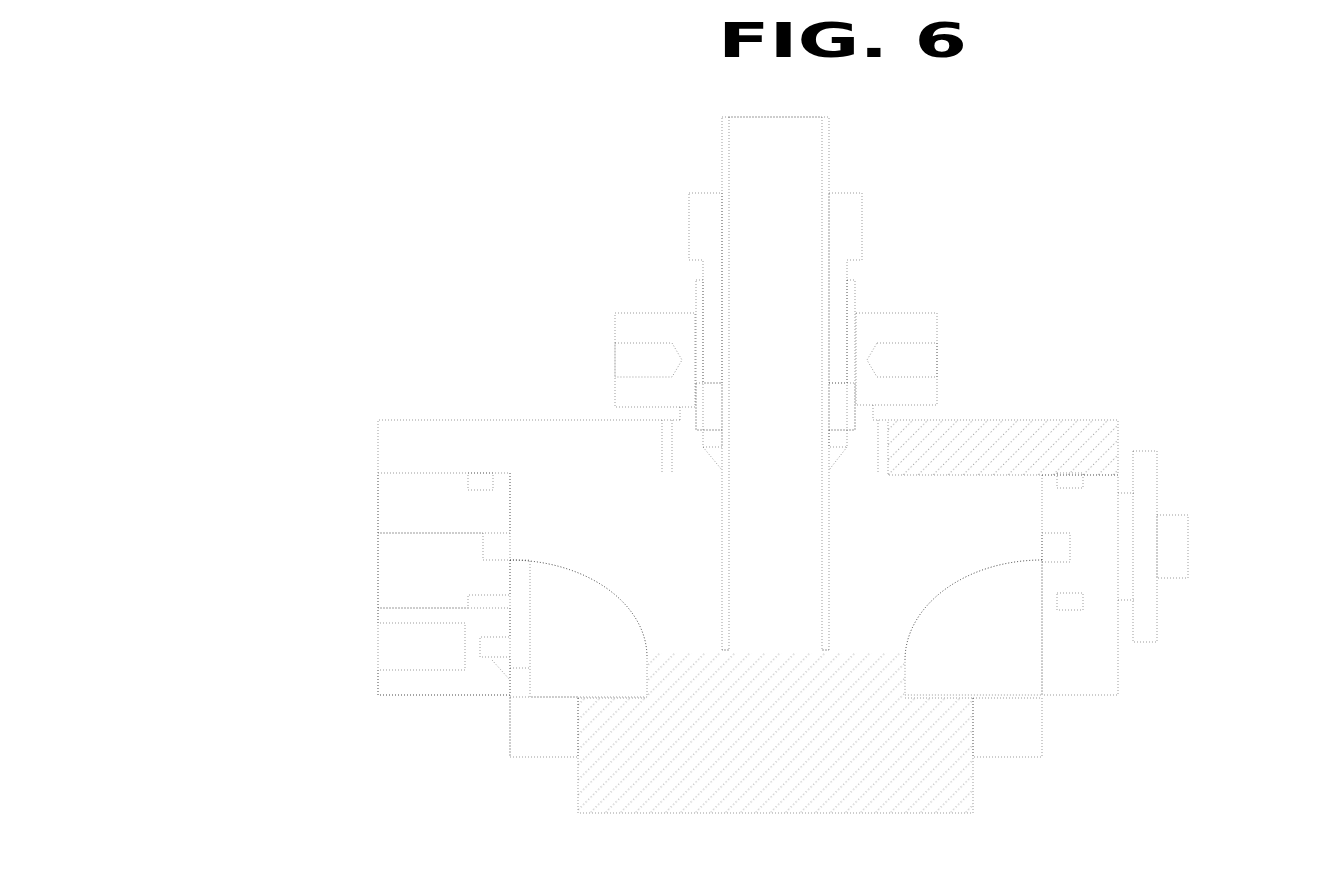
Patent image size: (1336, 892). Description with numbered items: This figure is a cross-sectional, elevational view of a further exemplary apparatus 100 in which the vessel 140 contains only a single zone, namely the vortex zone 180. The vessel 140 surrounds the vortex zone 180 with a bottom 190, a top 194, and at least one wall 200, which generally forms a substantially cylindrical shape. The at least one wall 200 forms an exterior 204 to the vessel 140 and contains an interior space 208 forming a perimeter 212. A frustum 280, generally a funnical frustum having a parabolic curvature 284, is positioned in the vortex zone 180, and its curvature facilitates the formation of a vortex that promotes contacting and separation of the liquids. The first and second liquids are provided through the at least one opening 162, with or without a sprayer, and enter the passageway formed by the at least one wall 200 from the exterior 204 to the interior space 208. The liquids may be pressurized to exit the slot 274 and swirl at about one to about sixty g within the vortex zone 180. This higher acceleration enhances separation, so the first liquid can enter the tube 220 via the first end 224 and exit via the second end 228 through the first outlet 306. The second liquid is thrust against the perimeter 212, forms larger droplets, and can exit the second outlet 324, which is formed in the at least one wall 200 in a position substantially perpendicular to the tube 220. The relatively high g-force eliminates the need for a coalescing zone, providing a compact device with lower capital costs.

The apparatus 100 is at (343, 230).
The vessel 140 is at (568, 432).
The opening 162 is at (1190, 515).
The vortex zone 180 is at (900, 543).
The bottom 190 is at (790, 790).
The top 194 is at (973, 418).
The wall 200 is at (1087, 440).
The exterior 204 is at (380, 513).
The interior space 208 is at (690, 542).
The perimeter 212 is at (513, 497).
The tube 220 is at (797, 226).
The first end 224 is at (780, 648).
The second end 228 is at (782, 117).
The slot 274 is at (1045, 575).
The frustum 280 is at (558, 612).
The parabolic curvature 284 is at (617, 597).
The first outlet 306 is at (757, 137).
The second outlet 324 is at (490, 655).